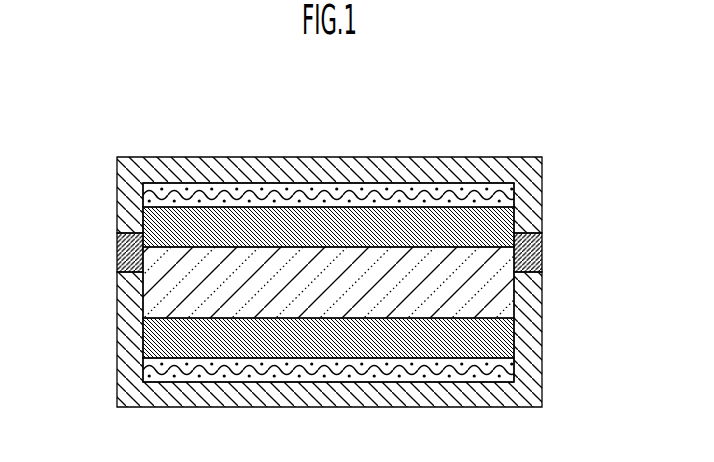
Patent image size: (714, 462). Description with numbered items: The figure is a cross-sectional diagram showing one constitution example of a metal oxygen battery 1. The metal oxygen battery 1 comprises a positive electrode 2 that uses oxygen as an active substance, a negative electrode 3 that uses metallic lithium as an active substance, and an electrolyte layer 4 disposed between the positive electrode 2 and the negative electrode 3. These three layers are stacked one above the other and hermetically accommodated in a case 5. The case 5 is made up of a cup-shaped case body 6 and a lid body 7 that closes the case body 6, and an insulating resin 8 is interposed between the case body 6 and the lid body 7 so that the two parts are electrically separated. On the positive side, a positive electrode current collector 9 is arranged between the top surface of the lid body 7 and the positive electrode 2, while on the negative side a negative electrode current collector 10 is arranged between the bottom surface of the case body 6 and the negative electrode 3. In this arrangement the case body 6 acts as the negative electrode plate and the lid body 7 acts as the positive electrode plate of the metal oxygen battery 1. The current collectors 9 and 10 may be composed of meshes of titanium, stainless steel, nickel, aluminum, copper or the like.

The metal oxygen battery 1 is at (344, 248).
The positive electrode 2 is at (520, 210).
The negative electrode 3 is at (515, 337).
The electrolyte layer 4 is at (512, 292).
The case 5 is at (294, 282).
The case body 6 is at (309, 339).
The lid body 7 is at (117, 218).
The insulating resin 8 is at (117, 253).
The positive electrode current collector 9 is at (507, 190).
The negative electrode current collector 10 is at (513, 365).